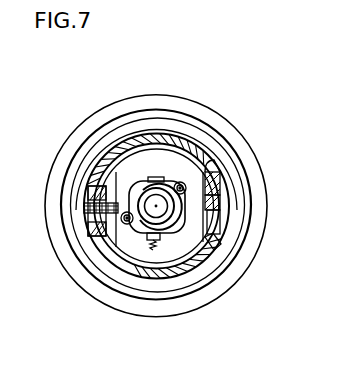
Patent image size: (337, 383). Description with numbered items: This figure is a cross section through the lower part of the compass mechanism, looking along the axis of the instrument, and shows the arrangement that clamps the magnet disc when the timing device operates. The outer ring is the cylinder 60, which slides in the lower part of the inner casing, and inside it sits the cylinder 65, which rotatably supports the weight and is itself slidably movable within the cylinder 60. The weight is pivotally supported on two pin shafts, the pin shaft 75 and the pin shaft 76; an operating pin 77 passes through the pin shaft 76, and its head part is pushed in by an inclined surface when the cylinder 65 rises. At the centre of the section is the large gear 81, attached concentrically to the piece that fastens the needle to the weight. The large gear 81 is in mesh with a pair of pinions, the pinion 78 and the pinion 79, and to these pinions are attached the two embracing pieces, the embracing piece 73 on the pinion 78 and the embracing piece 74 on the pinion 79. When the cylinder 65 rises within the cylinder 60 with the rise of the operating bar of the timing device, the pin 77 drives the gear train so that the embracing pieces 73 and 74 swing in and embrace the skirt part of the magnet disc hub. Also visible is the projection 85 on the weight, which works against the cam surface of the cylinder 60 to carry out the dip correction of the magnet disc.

The cylinder 60 is at (183, 142).
The cylinder 65 is at (215, 187).
The embracing piece 73 is at (142, 180).
The embracing piece 74 is at (170, 234).
The pin shaft 75 is at (216, 200).
The pin shaft 76 is at (86, 206).
The operating pin 77 is at (88, 226).
The pinion 78 is at (122, 226).
The pinion 79 is at (185, 183).
The large gear 81 is at (156, 192).
The projection 85 is at (218, 223).